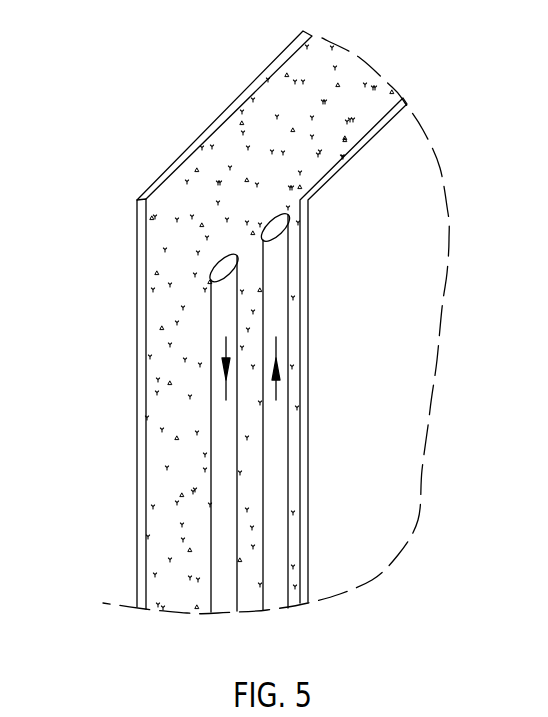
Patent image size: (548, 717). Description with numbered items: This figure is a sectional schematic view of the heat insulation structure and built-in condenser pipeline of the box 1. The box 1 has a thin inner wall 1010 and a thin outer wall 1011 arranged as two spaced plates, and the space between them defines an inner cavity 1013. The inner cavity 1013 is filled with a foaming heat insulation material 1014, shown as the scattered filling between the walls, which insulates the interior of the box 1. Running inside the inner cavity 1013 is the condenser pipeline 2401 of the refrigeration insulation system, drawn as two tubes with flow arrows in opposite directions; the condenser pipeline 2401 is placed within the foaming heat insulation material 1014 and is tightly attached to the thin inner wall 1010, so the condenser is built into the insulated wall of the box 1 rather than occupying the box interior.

The box 1 is at (472, 338).
The thin inner wall 1010 is at (300, 388).
The thin outer wall 1011 is at (141, 297).
The inner cavity 1013 is at (318, 127).
The foaming heat insulation material 1014 is at (221, 214).
The condenser pipeline 2401 is at (227, 437).